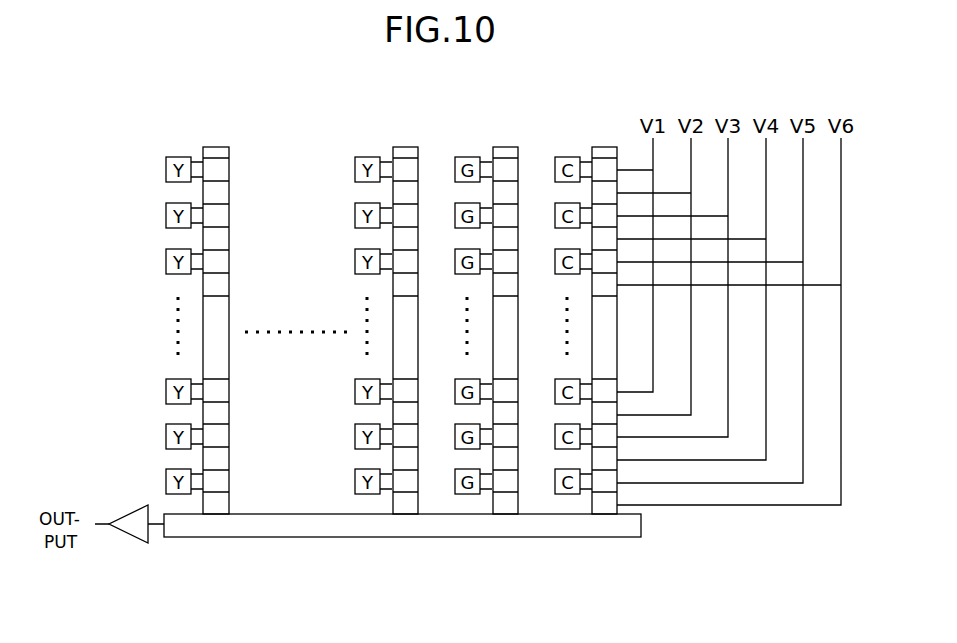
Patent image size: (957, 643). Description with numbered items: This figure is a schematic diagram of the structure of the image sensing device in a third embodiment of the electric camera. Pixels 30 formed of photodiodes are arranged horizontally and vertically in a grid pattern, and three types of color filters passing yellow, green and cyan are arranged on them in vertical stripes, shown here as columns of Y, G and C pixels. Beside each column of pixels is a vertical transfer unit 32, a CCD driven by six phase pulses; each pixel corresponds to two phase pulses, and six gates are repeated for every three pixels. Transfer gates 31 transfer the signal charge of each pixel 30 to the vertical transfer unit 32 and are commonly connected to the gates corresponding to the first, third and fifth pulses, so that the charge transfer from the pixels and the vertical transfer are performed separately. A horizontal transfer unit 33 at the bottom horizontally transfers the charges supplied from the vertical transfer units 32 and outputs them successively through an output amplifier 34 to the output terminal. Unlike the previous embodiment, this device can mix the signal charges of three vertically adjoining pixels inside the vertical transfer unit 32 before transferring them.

The pixels 30 is at (563, 156).
The transfer gates 31 is at (588, 161).
The vertical transfer unit 32 is at (603, 147).
The horizontal transfer unit 33 is at (403, 539).
The output amplifier 34 is at (128, 536).